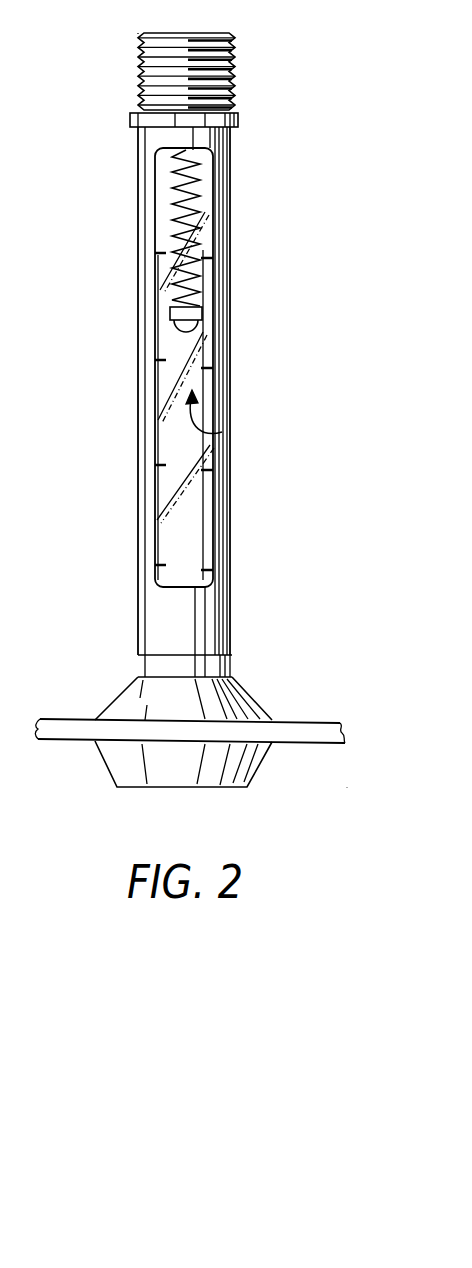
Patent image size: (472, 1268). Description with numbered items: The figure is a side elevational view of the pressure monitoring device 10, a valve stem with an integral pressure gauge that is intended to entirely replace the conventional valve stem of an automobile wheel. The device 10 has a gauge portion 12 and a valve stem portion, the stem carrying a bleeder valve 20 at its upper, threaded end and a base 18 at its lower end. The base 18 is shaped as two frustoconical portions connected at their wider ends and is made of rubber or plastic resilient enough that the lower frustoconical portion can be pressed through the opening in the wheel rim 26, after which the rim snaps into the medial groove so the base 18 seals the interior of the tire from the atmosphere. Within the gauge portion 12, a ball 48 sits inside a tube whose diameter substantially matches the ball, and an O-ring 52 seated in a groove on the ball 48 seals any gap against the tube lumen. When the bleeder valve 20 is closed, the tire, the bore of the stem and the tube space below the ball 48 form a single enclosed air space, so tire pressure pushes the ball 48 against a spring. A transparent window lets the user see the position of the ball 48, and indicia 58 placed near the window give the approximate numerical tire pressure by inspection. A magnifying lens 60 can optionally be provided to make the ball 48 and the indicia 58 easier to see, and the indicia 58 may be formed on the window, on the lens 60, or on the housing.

The pressure monitoring device 10 is at (296, 76).
The bleeder valve 20 is at (138, 62).
The gauge portion 12 is at (230, 627).
The ball 48 is at (206, 334).
The O-ring 52 is at (178, 313).
The indicia 58 is at (222, 432).
The magnifying lens 60 is at (189, 528).
The base 18 is at (252, 700).
The wheel rim 26 is at (320, 722).